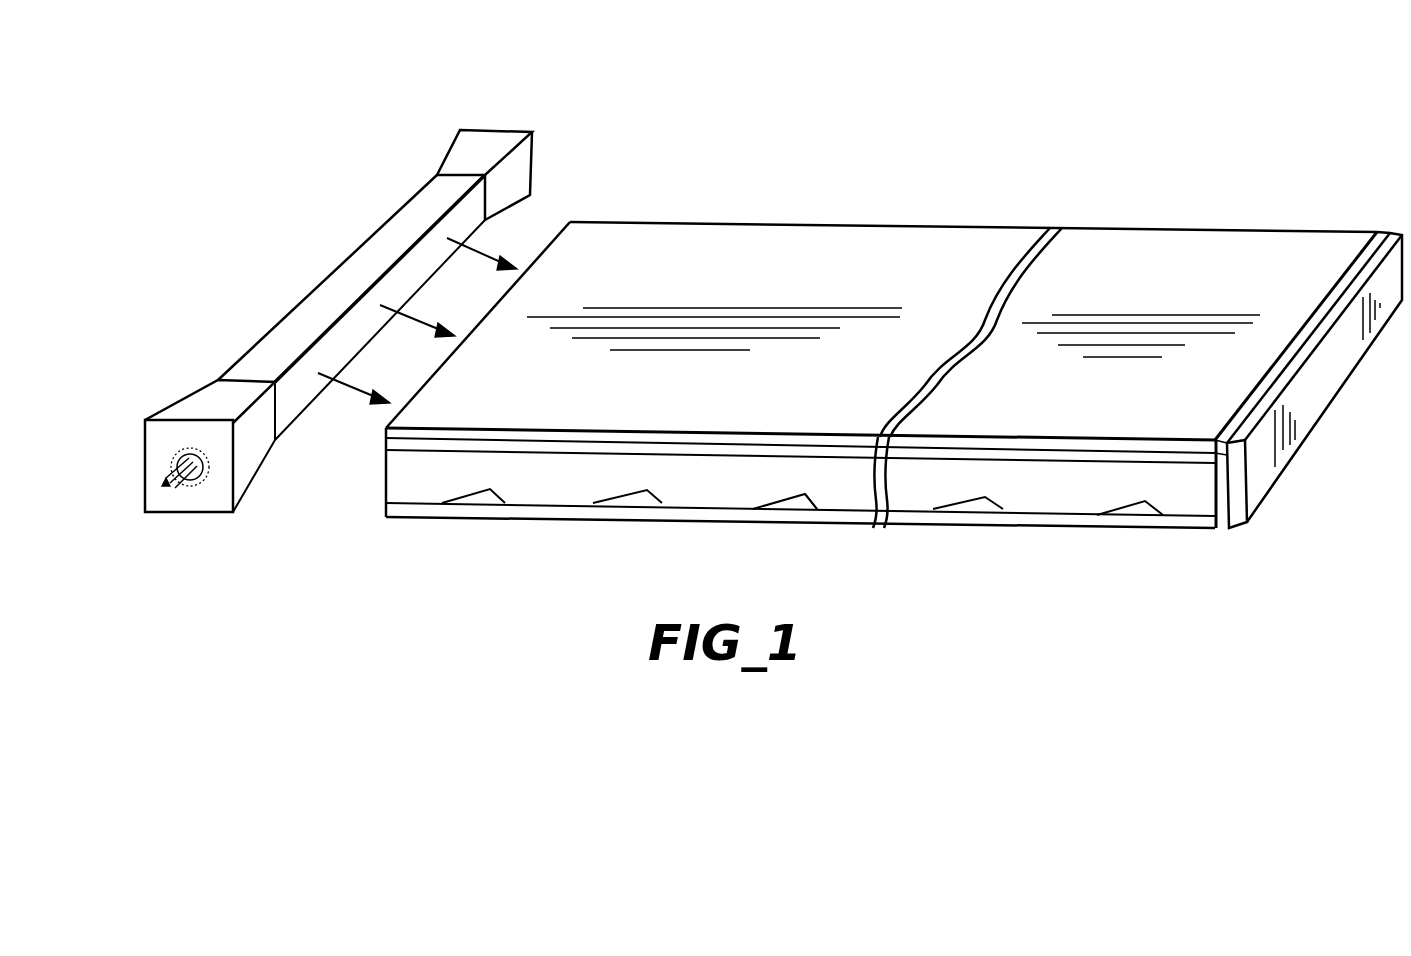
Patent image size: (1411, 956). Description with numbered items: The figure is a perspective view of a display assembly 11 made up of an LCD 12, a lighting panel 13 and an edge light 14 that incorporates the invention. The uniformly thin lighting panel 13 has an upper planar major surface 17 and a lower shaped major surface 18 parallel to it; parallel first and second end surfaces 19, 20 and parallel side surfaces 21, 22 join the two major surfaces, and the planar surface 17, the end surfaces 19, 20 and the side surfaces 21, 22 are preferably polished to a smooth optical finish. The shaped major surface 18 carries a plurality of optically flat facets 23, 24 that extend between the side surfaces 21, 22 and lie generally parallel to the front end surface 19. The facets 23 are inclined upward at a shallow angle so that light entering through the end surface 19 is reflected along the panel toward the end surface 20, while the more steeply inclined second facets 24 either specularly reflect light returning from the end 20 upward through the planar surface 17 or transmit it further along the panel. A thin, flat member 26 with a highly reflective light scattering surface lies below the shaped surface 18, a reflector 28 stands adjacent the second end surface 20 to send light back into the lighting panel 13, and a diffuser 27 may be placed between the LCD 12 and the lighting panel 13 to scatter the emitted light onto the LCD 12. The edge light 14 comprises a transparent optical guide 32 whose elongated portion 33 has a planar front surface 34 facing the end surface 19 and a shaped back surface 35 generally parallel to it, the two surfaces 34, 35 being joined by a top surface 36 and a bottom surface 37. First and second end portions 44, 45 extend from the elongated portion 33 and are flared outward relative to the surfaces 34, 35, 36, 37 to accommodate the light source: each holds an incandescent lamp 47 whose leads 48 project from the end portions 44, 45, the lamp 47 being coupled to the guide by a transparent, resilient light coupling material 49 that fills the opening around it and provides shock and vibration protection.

The display assembly 11 is at (944, 205).
The LCD 12 is at (1120, 260).
The lighting panel 13 is at (1293, 557).
The edge light 14 is at (426, 158).
The upper planar major surface 17 is at (527, 453).
The lower shaped major surface 18 is at (677, 510).
The first end surface 19 is at (386, 480).
The second end surface 20 is at (1200, 497).
The side surface 21 is at (915, 493).
The side surface 22 is at (778, 222).
The facet 23 is at (783, 505).
The second facet 24 is at (808, 503).
The flat member 26 is at (1182, 520).
The diffuser 27 is at (1068, 457).
The reflector 28 is at (1328, 362).
The optical guide 32 is at (228, 360).
The elongated portion 33 is at (347, 252).
The planar front surface 34 is at (477, 233).
The shaped back surface 35 is at (393, 213).
The top surface 36 is at (313, 313).
The bottom surface 37 is at (298, 420).
The first end portion 44 is at (250, 467).
The second end portion 45 is at (505, 140).
The incandescent lamp 47 is at (208, 480).
The leads 48 is at (173, 487).
The light coupling material 49 is at (172, 453).